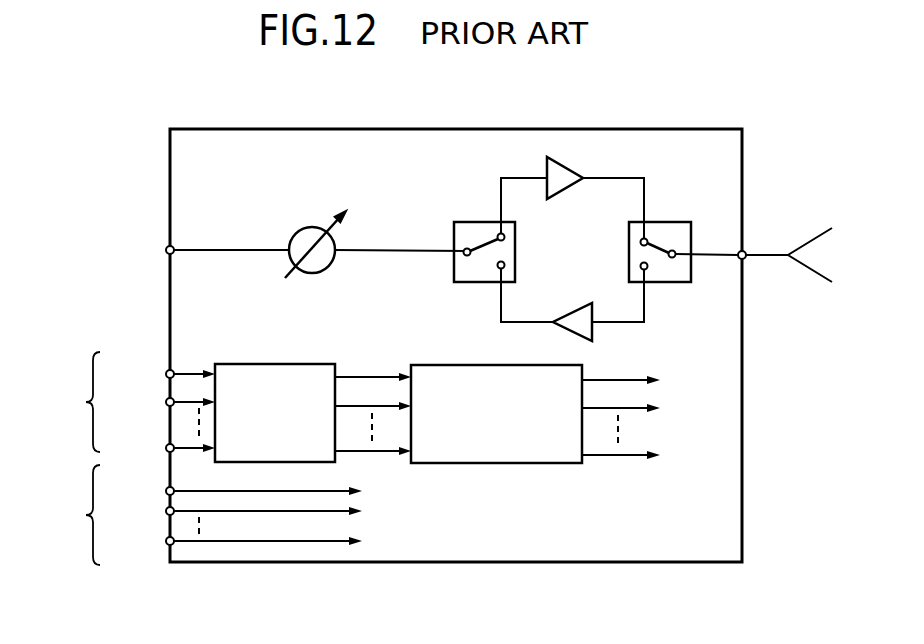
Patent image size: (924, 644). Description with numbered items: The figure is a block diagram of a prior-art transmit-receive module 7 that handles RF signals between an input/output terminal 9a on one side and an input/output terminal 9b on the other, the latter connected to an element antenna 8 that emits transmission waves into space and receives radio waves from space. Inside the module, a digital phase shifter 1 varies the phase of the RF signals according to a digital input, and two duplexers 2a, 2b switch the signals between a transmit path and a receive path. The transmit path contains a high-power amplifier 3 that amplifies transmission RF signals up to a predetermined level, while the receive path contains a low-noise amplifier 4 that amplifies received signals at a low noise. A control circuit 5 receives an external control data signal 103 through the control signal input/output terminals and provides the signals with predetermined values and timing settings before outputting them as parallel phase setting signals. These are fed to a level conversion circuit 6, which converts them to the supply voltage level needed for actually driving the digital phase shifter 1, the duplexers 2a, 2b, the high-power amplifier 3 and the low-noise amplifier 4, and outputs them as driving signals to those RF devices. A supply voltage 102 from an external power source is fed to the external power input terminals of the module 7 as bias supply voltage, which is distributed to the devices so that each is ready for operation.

The digital phase shifter 1 is at (305, 227).
The duplexer 2a is at (470, 222).
The duplexer 2b is at (668, 222).
The high-power amplifier 3 is at (570, 157).
The low-noise amplifier 4 is at (594, 327).
The control circuit 5 is at (250, 364).
The level conversion circuit 6 is at (445, 465).
The transmit-receive module 7 is at (583, 565).
The element antenna 8 is at (812, 238).
The input/output terminal 9a is at (165, 250).
The input/output terminal 9b is at (746, 249).
The supply voltage 102 is at (63, 515).
The control data signal 103 is at (61, 402).